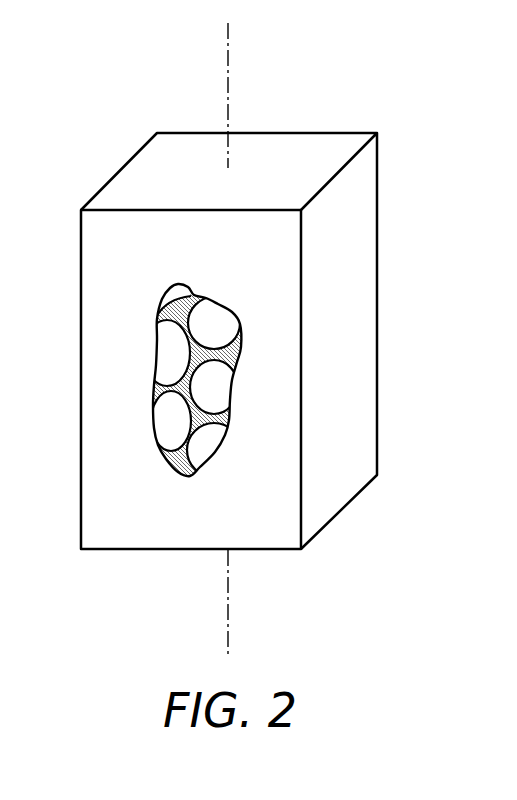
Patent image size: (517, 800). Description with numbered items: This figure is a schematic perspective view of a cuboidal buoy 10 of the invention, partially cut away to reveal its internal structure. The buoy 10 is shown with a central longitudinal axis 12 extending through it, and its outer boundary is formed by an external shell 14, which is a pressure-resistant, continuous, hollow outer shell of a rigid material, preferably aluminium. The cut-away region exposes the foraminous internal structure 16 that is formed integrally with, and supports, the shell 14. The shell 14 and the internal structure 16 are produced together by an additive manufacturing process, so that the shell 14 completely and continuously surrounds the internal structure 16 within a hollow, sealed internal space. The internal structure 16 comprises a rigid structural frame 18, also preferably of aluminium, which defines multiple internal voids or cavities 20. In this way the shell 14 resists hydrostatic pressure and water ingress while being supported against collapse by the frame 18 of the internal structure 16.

The buoy 10 is at (378, 73).
The central longitudinal axis 12 is at (228, 36).
The external shell 14 is at (93, 319).
The foraminous internal structure 16 is at (190, 352).
The structural frame 18 is at (162, 450).
The internal voids or cavities 20 is at (218, 386).